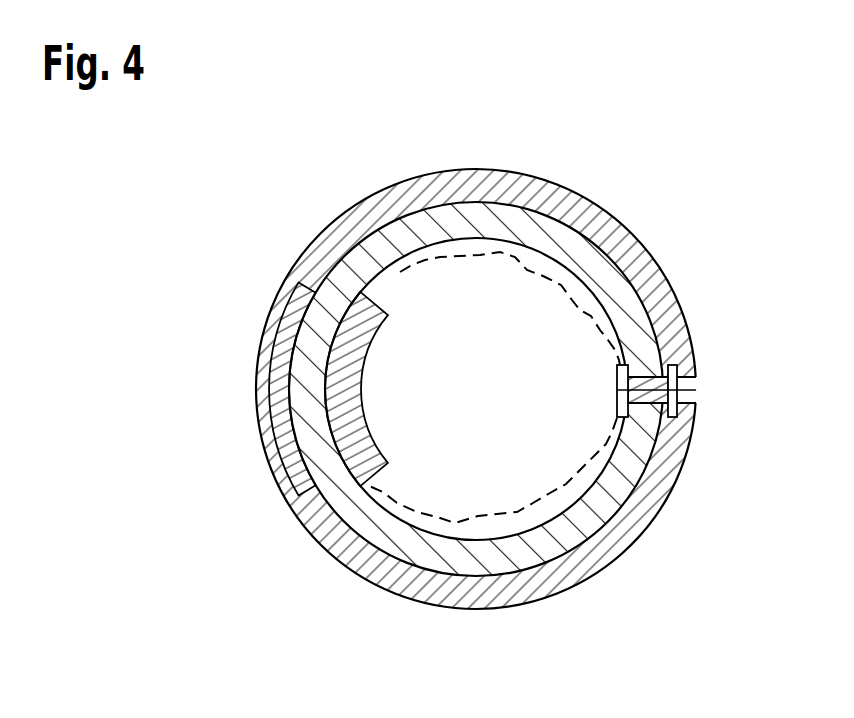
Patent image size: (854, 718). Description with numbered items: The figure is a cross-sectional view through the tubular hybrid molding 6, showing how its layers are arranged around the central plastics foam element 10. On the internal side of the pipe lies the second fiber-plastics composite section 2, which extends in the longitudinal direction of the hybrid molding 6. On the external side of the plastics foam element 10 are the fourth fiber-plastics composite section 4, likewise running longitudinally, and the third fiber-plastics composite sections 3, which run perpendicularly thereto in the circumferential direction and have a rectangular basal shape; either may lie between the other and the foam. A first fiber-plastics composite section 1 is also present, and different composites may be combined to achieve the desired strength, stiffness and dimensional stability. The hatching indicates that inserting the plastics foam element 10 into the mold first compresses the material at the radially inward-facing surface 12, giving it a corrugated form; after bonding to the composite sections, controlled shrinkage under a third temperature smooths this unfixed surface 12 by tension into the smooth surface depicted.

The hybrid molding 6 is at (236, 191).
The third fiber-plastics composite sections 3 is at (618, 538).
The plastics foam element 10 is at (618, 287).
The fourth fiber-plastics composite section 4 is at (282, 397).
The second fiber-plastics composite section 2 is at (352, 391).
The radially inward-facing mold surface 12 is at (430, 263).
The first fiber-plastics composite sections 1 is at (680, 383).